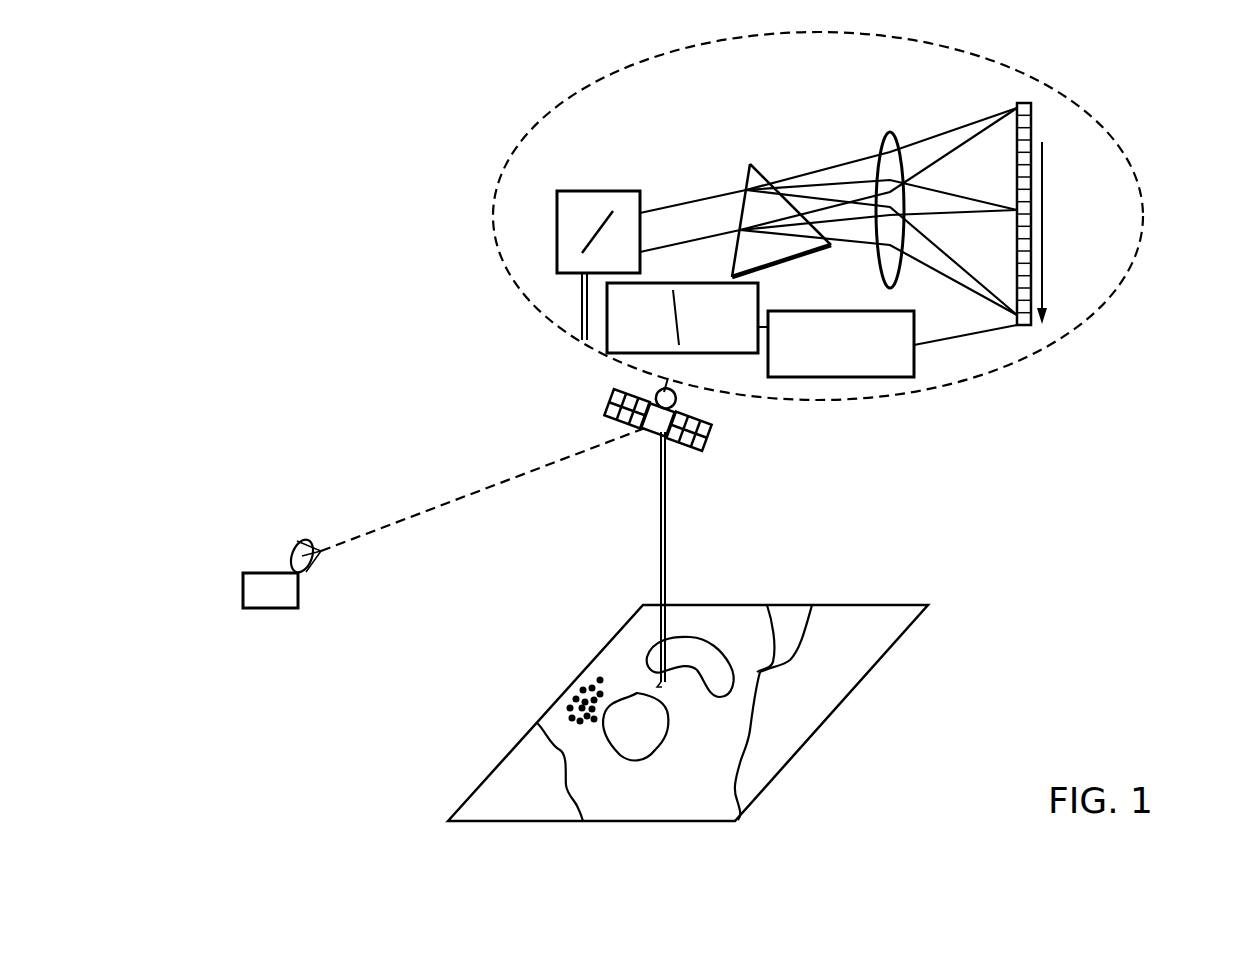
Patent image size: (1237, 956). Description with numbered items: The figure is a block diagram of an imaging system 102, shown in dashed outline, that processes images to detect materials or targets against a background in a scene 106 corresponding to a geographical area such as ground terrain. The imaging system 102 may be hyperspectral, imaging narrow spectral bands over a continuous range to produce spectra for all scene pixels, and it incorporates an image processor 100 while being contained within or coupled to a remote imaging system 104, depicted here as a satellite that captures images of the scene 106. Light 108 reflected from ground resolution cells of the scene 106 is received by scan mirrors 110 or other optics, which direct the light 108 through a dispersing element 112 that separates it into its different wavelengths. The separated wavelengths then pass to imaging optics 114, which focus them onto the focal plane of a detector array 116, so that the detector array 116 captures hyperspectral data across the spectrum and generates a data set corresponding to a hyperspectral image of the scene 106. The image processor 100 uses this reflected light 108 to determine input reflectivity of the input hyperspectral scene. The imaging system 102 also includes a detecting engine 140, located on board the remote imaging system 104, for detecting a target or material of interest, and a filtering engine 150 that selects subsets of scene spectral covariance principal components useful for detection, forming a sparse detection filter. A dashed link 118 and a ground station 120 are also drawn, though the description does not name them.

The image processor 100 is at (840, 377).
The imaging system 102 is at (970, 383).
The remote imaging system 104 is at (700, 440).
The scene 106 is at (547, 708).
The light 108 is at (582, 300).
The scan mirrors 110 is at (600, 191).
The dispersing element 112 is at (752, 172).
The imaging optics 114 is at (890, 132).
The detector array 116 is at (1022, 103).
The communication link 118 is at (470, 490).
The ground station 120 is at (258, 573).
The detecting engine 140 is at (660, 330).
The filtering engine 150 is at (733, 330).